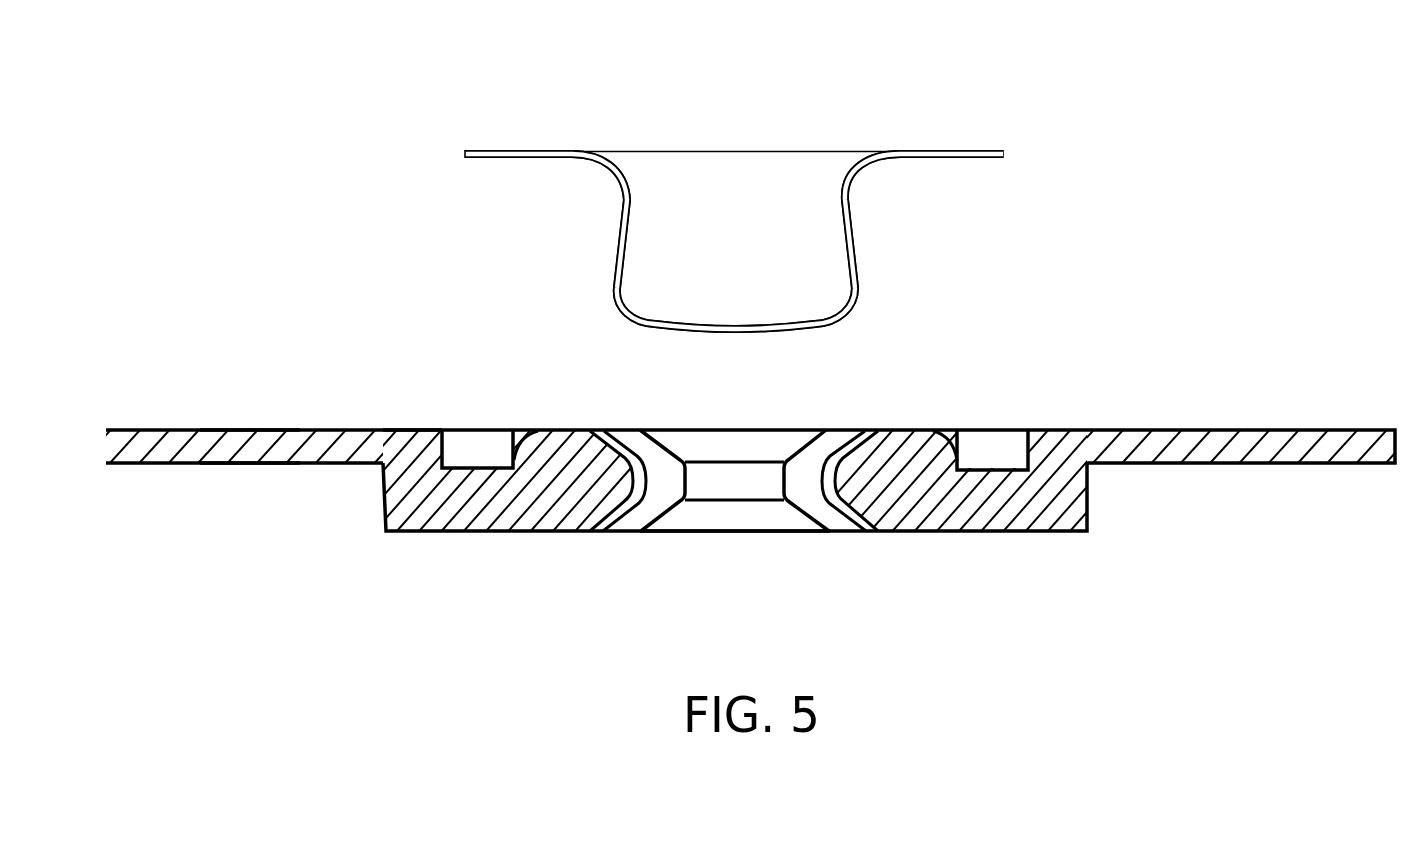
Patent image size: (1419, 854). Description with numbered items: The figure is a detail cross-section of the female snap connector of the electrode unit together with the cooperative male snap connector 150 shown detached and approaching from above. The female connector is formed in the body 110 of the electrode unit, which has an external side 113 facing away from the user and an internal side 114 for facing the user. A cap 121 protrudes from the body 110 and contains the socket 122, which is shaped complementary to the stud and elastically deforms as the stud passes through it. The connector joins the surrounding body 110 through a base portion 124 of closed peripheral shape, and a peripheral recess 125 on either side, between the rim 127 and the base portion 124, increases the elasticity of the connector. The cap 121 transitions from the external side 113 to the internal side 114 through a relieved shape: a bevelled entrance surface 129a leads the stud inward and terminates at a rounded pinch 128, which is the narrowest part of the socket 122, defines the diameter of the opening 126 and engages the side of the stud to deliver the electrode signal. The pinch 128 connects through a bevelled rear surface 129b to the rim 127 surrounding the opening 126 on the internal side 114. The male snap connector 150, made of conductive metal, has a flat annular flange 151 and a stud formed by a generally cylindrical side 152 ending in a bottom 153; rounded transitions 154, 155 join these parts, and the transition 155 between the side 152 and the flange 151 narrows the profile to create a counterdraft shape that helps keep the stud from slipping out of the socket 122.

The body 110 is at (1247, 431).
The external side 113 is at (250, 474).
The internal side 114 is at (250, 418).
The cap 121 is at (470, 512).
The socket 122 is at (706, 550).
The base portion 124 is at (400, 433).
The peripheral recess 125 is at (475, 448).
The opening 126 is at (727, 476).
The rim 127 is at (541, 440).
The pinch 128 is at (822, 485).
The entrance surface 129a is at (858, 532).
The rear surface 129b is at (838, 448).
The male snap connector 150 is at (425, 138).
The flange 151 is at (955, 150).
The side 152 is at (615, 245).
The bottom 153 is at (735, 324).
The rounded transition 154 is at (850, 312).
The rounded transition 155 is at (860, 182).